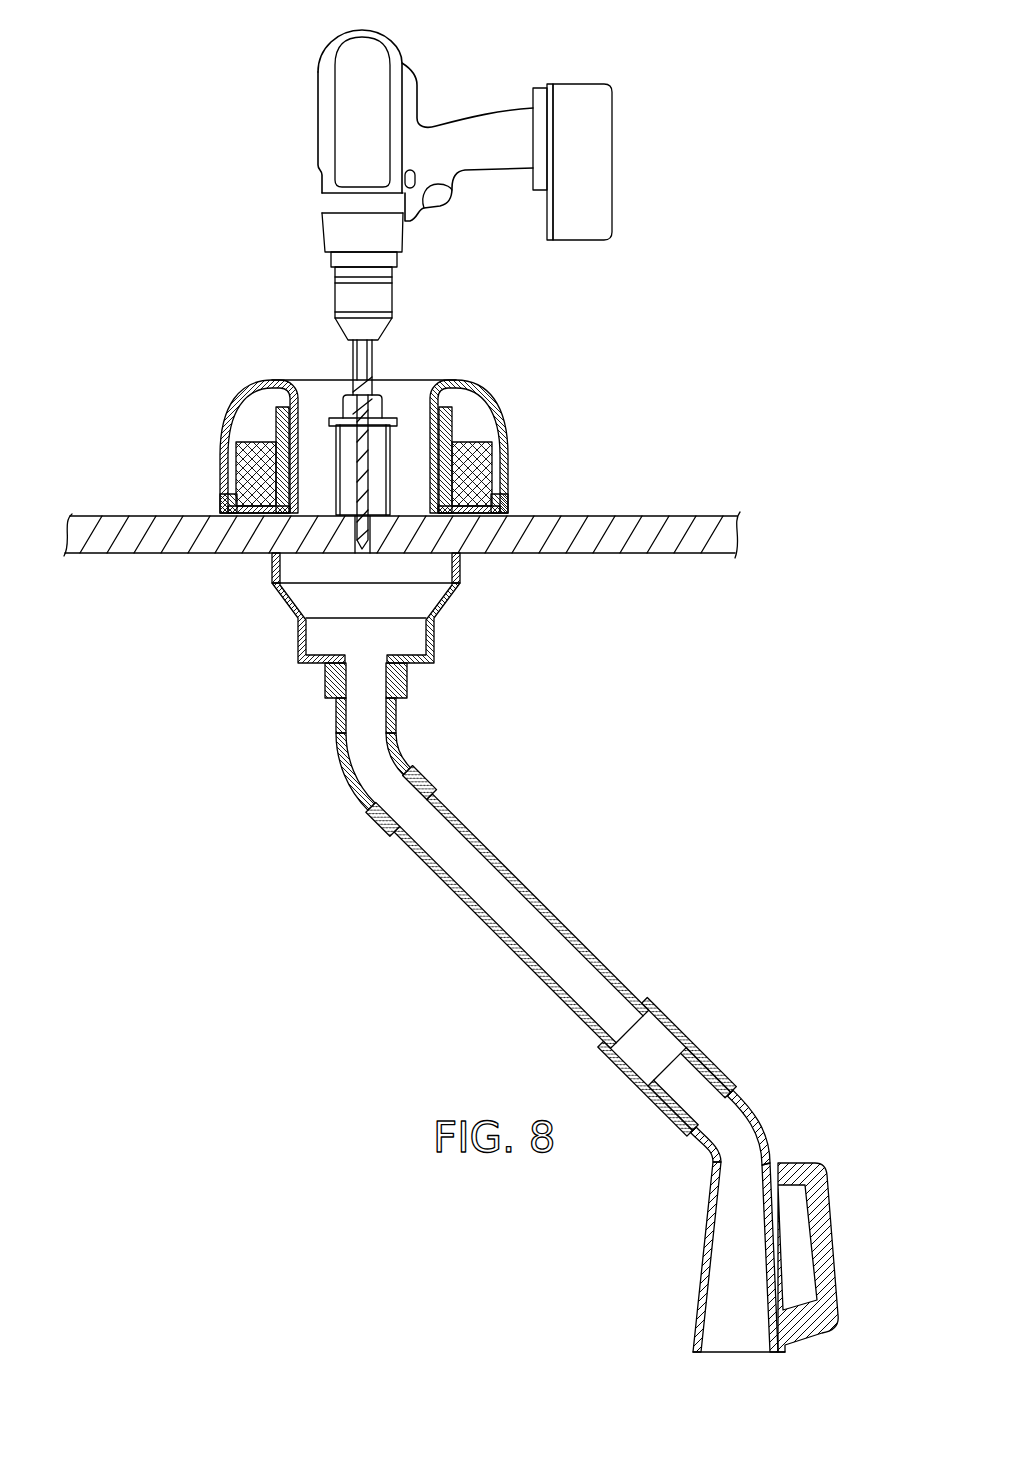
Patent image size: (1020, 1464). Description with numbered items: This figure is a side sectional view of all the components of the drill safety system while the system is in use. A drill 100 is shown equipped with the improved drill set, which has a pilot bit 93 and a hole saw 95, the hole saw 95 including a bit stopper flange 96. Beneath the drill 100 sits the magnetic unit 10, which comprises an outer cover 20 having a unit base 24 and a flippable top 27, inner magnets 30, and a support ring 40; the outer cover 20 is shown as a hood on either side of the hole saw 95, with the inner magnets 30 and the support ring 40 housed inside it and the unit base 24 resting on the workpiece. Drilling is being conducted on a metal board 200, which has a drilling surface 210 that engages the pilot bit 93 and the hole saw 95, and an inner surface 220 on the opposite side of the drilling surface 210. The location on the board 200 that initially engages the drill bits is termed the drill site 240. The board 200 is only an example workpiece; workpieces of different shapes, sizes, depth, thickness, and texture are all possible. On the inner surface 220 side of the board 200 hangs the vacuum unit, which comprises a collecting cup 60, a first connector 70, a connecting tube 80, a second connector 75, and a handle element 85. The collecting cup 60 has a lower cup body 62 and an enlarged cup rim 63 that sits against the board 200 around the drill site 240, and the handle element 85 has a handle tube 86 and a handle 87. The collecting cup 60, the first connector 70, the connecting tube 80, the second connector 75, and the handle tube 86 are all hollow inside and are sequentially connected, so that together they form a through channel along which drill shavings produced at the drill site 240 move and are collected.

The drill 100 is at (299, 49).
The magnetic unit 10 is at (337, 427).
The outer cover 20 is at (315, 446).
The flippable top 27 is at (226, 424).
The unit base 24 is at (221, 511).
The inner magnets 30 is at (491, 460).
The support ring 40 is at (455, 416).
The bit stopper flange 96 is at (394, 420).
The hole saw 95 is at (390, 466).
The metal board 200 is at (402, 534).
The drilling surface 210 is at (611, 516).
The inner surface 220 is at (620, 553).
The drill site 240 is at (368, 545).
The pilot bit 93 is at (274, 576).
The enlarged cup rim 63 is at (357, 532).
The collecting cup 60 is at (336, 610).
The lower cup body 62 is at (298, 641).
The first connector 70 is at (342, 770).
The connecting tube 80 is at (509, 909).
The second connector 75 is at (667, 1066).
The handle element 85 is at (745, 1212).
The handle tube 86 is at (758, 1126).
The handle 87 is at (826, 1232).